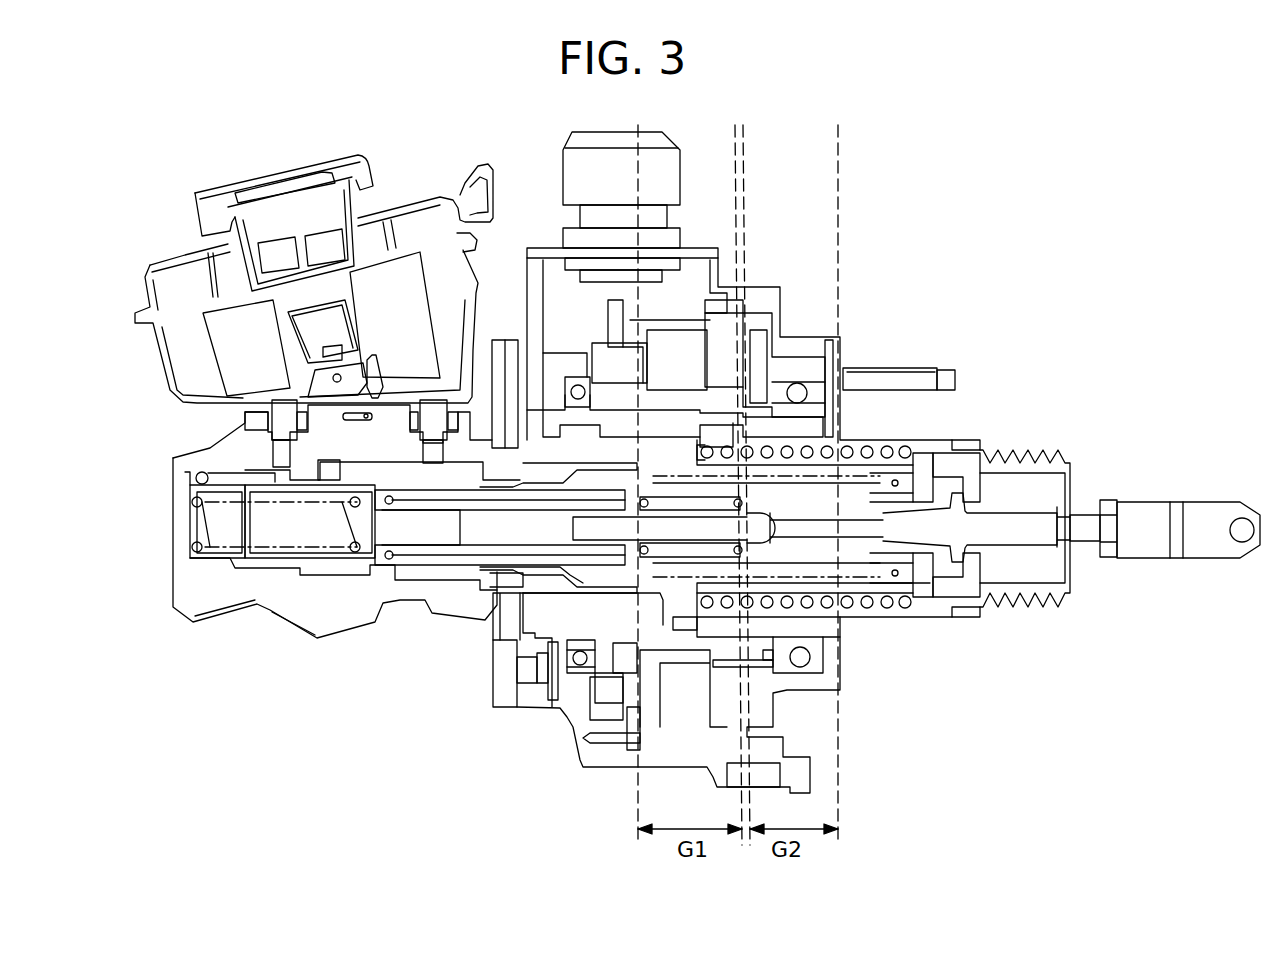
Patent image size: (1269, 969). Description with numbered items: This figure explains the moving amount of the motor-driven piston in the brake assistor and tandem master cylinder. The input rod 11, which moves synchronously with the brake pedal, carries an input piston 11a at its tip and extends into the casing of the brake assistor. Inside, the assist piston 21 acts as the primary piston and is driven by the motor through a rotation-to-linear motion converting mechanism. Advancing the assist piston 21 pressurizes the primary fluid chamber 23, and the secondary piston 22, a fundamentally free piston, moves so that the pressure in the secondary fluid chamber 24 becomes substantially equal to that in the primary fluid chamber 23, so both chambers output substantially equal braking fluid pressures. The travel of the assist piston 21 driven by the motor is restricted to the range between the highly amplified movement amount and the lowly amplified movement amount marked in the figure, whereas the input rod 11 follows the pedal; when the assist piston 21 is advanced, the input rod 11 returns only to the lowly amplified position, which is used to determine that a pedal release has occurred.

The input rod 11 is at (1023, 533).
The input piston 11a is at (505, 347).
The assist piston 21 is at (468, 547).
The secondary piston 22 is at (300, 567).
The primary fluid chamber 23 is at (407, 555).
The secondary fluid chamber 24 is at (228, 530).